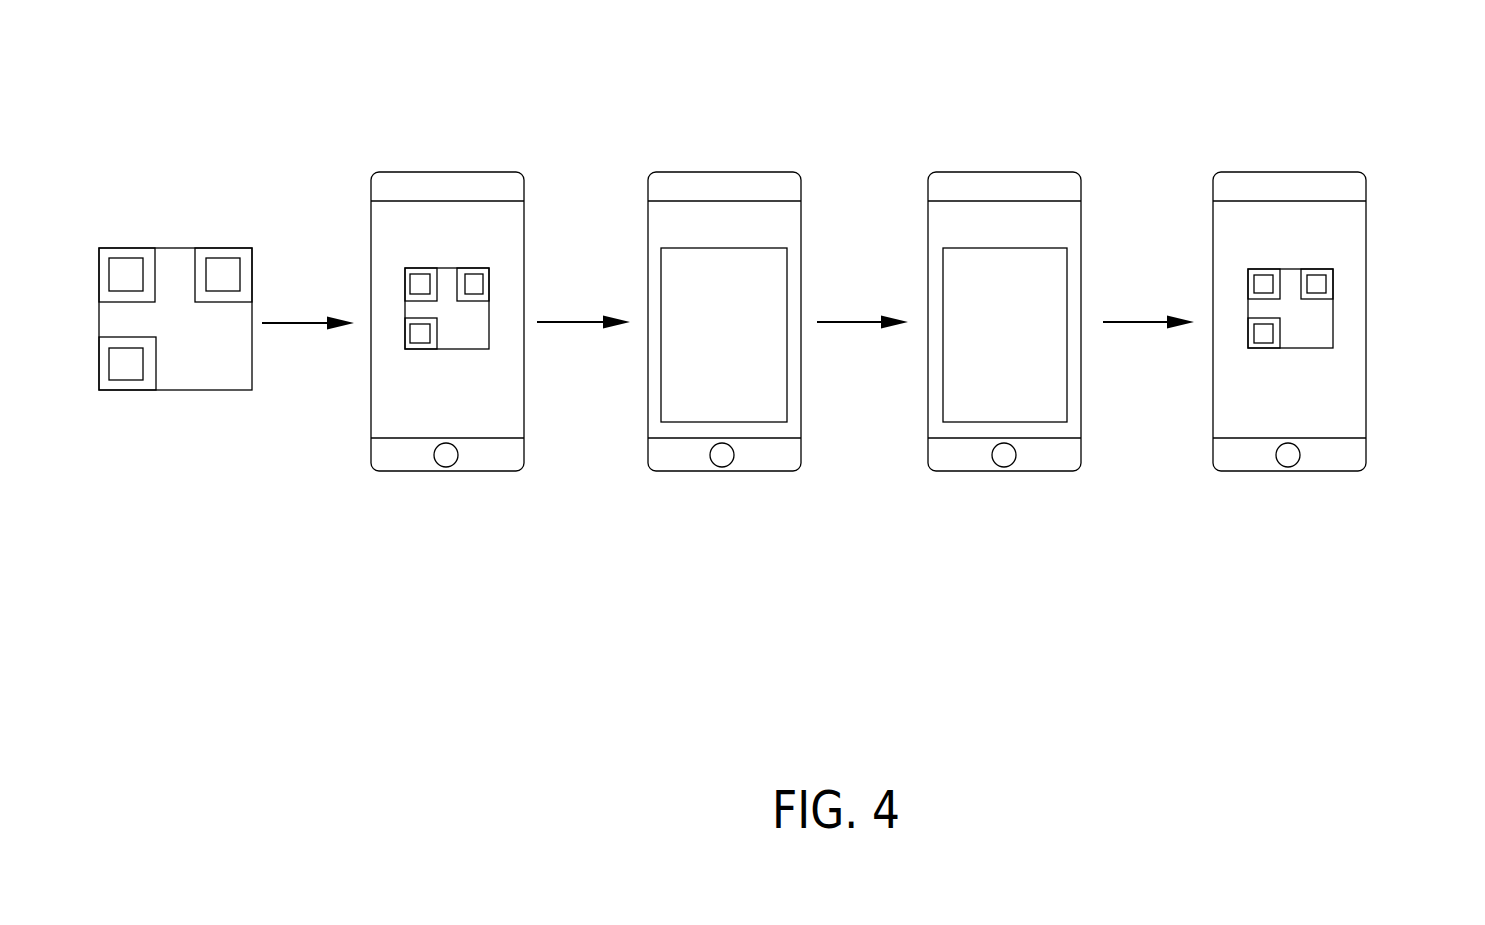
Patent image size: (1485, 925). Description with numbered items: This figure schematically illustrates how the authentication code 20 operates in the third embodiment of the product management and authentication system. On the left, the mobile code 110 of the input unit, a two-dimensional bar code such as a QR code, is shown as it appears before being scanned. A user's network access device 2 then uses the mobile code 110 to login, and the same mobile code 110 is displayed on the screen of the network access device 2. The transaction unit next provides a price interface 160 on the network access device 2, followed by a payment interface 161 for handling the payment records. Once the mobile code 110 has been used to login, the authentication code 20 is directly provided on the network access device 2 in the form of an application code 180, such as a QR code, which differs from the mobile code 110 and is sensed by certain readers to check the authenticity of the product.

The network access device 2 is at (410, 172).
The authentication code 20 is at (784, 210).
The mobile code 110 is at (184, 238).
The price interface 160 is at (788, 273).
The payment interface 161 is at (1082, 273).
The application code 180 is at (1333, 278).